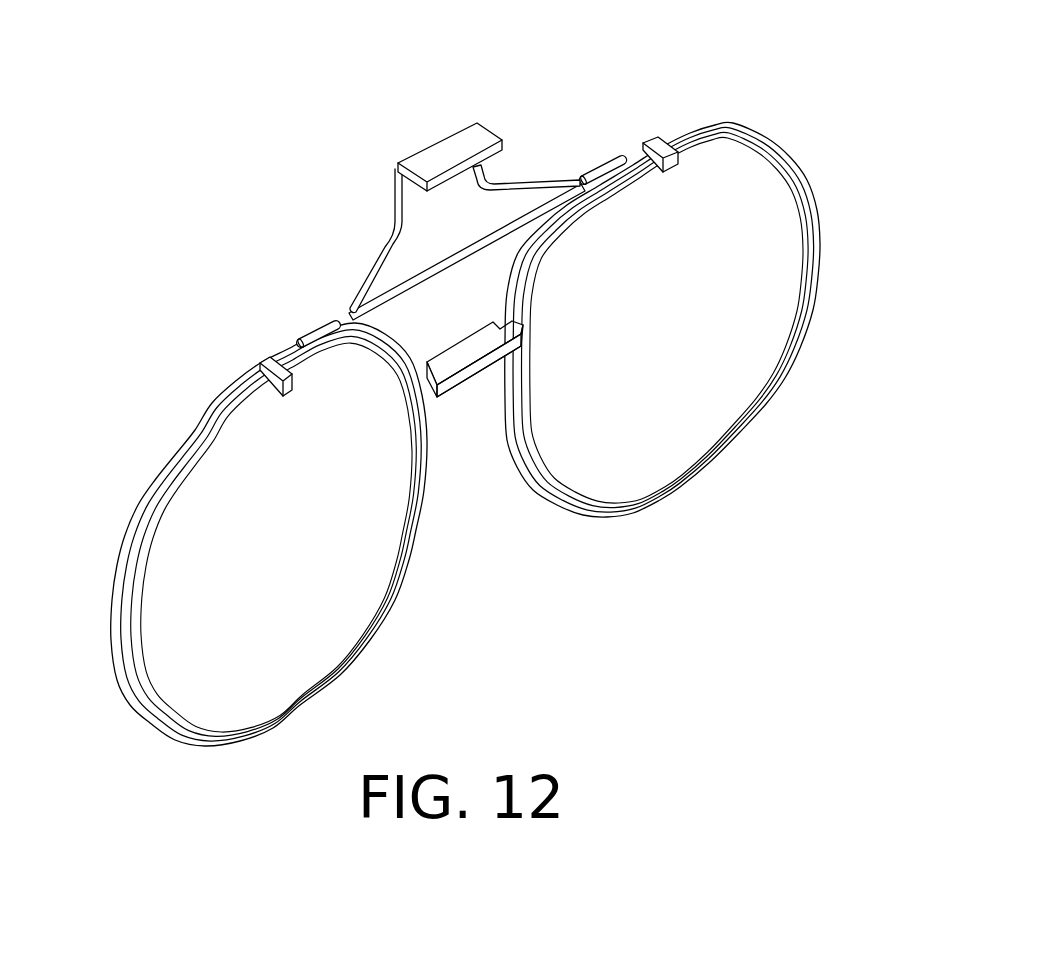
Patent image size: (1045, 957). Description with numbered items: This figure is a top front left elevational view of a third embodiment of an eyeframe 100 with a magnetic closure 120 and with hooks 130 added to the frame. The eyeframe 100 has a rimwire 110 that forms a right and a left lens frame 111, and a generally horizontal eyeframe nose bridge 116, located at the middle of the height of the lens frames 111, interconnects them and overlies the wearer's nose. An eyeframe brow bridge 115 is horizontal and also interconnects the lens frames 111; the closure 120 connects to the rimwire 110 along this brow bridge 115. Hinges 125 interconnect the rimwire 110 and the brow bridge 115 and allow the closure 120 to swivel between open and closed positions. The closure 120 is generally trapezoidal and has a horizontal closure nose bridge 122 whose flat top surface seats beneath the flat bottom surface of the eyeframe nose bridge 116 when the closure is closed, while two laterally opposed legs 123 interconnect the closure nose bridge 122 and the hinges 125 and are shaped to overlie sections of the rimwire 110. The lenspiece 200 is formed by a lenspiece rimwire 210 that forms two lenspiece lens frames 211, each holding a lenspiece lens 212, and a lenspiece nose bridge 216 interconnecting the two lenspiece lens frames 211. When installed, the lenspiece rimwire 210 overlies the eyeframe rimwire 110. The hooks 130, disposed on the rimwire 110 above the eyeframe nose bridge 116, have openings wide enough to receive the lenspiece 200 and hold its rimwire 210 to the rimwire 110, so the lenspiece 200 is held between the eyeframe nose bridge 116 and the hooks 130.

The eyeframe 100 is at (203, 246).
The rimwire 110 is at (718, 122).
The lens frame 111 is at (694, 123).
The eyeframe brow bridge 115 is at (427, 268).
The eyeframe nose bridge 116 is at (459, 398).
The closure 120 is at (372, 241).
The closure nose bridge 122 is at (437, 150).
The leg 123 is at (365, 282).
The hinge 125 is at (300, 333).
The hook 130 is at (260, 363).
The lenspiece 200 is at (499, 541).
The lenspiece rimwire 210 is at (812, 181).
The lenspiece lens frame 211 is at (757, 393).
The lenspiece lens 212 is at (690, 334).
The lenspiece nose bridge 216 is at (463, 340).